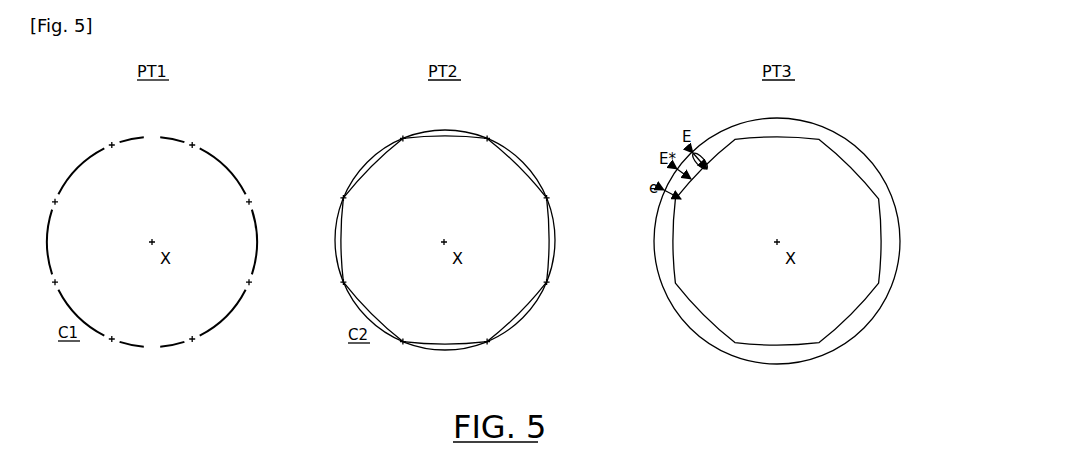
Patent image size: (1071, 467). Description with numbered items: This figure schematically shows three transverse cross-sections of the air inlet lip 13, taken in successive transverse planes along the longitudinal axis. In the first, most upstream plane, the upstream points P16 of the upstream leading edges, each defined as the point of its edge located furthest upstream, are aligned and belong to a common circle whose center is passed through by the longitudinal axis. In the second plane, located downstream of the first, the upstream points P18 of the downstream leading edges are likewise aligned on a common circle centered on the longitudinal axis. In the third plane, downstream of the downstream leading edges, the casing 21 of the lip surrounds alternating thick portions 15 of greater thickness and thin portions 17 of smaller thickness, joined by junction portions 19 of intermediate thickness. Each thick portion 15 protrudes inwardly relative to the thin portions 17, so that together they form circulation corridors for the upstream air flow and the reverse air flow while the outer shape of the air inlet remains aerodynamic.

The air inlet lip 13 is at (115, 120).
The thick portion 15 is at (528, 161).
The thin portion 17 is at (894, 188).
The junction portion 19 is at (884, 170).
The casing 21 is at (530, 312).
The upstream point of the upstream leading edge P16 is at (203, 145).
The upstream point of the downstream leading edge P18 is at (494, 139).